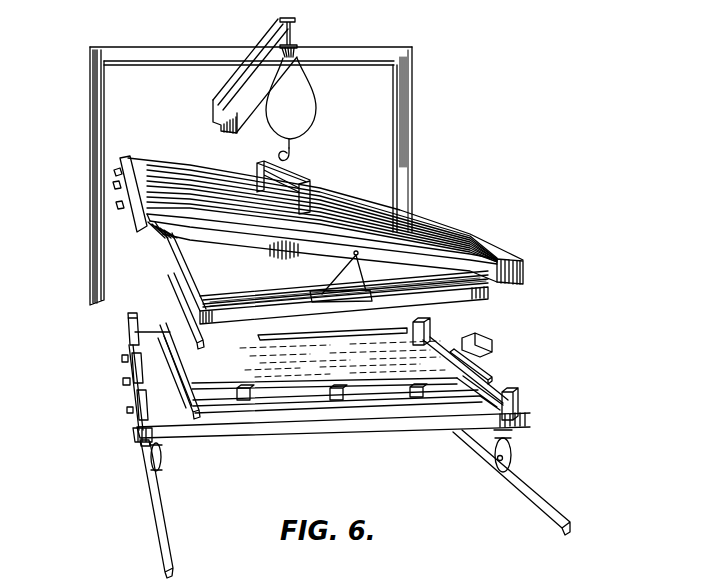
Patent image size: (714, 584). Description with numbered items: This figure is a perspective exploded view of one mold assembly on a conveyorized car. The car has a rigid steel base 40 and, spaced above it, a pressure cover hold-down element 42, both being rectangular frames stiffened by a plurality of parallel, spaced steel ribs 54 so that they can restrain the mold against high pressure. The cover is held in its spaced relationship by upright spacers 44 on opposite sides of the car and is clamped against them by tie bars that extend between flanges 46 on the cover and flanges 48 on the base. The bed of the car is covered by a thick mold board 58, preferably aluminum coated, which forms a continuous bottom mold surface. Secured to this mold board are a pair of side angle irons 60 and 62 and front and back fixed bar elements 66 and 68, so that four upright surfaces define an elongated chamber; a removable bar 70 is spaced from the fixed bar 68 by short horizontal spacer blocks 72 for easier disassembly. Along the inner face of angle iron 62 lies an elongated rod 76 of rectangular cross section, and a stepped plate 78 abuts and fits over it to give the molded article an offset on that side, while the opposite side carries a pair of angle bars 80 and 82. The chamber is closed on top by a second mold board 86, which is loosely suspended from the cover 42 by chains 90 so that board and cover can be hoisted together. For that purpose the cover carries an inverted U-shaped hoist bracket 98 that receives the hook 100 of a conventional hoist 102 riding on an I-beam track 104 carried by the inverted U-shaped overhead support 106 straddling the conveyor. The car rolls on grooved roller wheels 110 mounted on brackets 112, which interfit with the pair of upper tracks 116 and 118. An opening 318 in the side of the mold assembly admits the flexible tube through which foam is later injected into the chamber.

The base 40 is at (517, 402).
The pressure cover hold-down element 42 is at (527, 272).
The upright spacers 44 is at (142, 396).
The flanges 46 is at (118, 170).
The flanges 48 is at (123, 358).
The steel ribs 54 is at (425, 222).
The mold board 58 is at (187, 428).
The angle iron 60 is at (160, 337).
The angle iron 62 is at (517, 417).
The front fixed bar element 66 is at (382, 318).
The back fixed bar element 68 is at (320, 400).
The removable bar 70 is at (288, 383).
The spacer blocks 72 is at (338, 393).
The elongated rod 76 is at (497, 380).
The stepped plate 78 is at (492, 343).
The angle bar 80 is at (195, 375).
The angle bar 82 is at (196, 347).
The second mold board 86 is at (490, 293).
The chains 90 is at (347, 262).
The hoist bracket 98 is at (293, 187).
The hook 100 is at (295, 147).
The hoist 102 is at (288, 107).
The I-beam track 104 is at (298, 33).
The overhead support 106 is at (405, 75).
The roller wheels 110 is at (160, 472).
The brackets 112 is at (147, 443).
The upper track 116 is at (175, 546).
The upper track 118 is at (545, 503).
The opening 318 is at (178, 367).